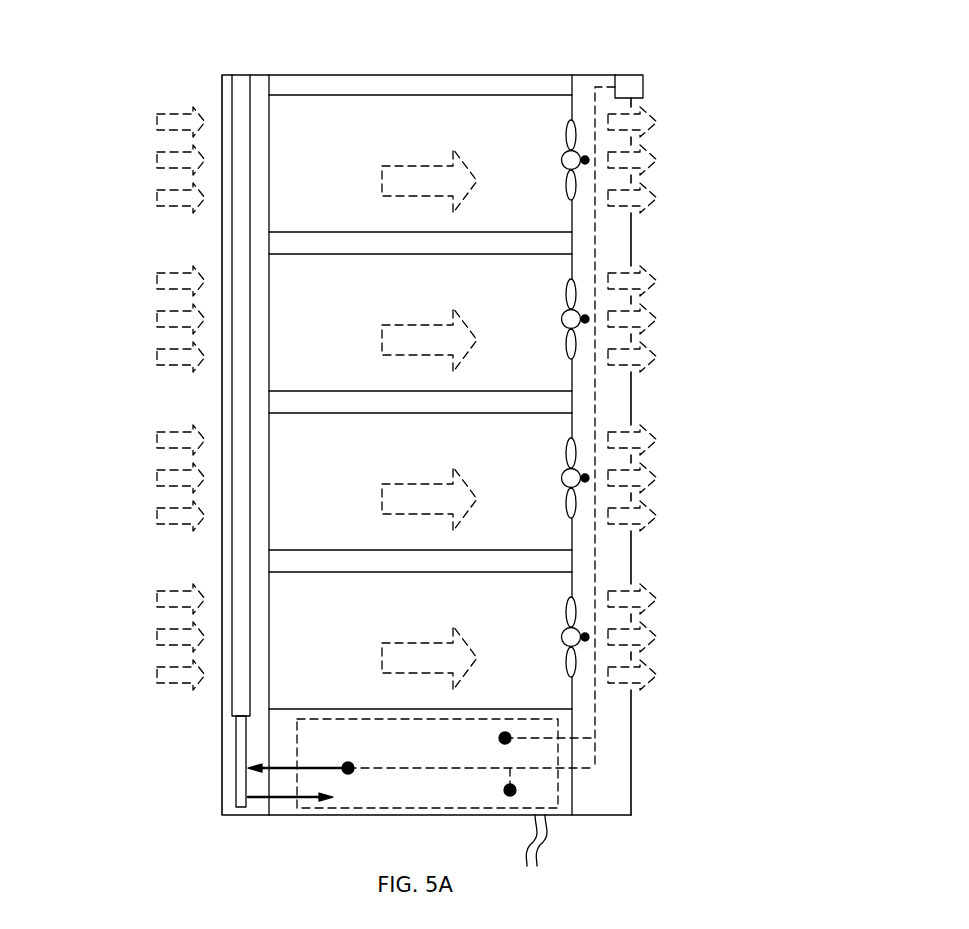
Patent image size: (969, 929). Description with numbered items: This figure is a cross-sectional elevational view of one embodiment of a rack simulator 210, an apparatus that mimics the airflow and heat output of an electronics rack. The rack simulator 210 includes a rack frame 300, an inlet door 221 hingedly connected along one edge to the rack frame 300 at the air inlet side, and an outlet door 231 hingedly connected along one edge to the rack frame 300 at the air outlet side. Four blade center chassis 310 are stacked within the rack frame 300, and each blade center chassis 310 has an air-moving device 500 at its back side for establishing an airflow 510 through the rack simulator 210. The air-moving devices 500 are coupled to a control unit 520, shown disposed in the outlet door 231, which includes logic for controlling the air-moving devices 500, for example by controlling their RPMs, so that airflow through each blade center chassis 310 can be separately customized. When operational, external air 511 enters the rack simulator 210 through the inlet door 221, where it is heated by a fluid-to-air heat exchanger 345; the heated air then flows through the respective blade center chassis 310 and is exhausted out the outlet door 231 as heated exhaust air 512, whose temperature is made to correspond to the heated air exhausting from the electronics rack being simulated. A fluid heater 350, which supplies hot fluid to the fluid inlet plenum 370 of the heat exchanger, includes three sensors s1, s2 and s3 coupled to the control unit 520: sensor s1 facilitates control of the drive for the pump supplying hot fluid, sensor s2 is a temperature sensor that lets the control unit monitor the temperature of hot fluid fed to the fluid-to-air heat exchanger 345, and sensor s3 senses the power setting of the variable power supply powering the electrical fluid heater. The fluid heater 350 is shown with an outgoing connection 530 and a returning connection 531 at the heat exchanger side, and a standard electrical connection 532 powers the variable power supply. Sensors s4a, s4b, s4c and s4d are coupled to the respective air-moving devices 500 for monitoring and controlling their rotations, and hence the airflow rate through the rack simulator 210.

The rack simulator 210 is at (410, 70).
The inlet door 221 is at (264, 75).
The outlet door 231 is at (594, 75).
The rack frame 300 is at (508, 75).
The blade center chassis 310 is at (398, 140).
The fluid-to-air heat exchanger 345 is at (243, 95).
The fluid heater 350 is at (399, 748).
The fluid inlet plenum 370 is at (242, 567).
The air-moving device 500 is at (562, 165).
The airflow 510 is at (382, 182).
The external air 511 is at (157, 284).
The heated exhaust air 512 is at (657, 473).
The control unit 520 is at (638, 88).
The control signal out 530 is at (285, 762).
The feedback signal in 531 is at (283, 799).
The electrical connection 532 is at (543, 838).
The sensor s1 is at (533, 738).
The sensor s2 is at (466, 754).
The sensor s3 is at (494, 785).
The sensor s4a is at (585, 160).
The sensor s4b is at (585, 319).
The sensor s4c is at (585, 478).
The sensor s4d is at (585, 637).